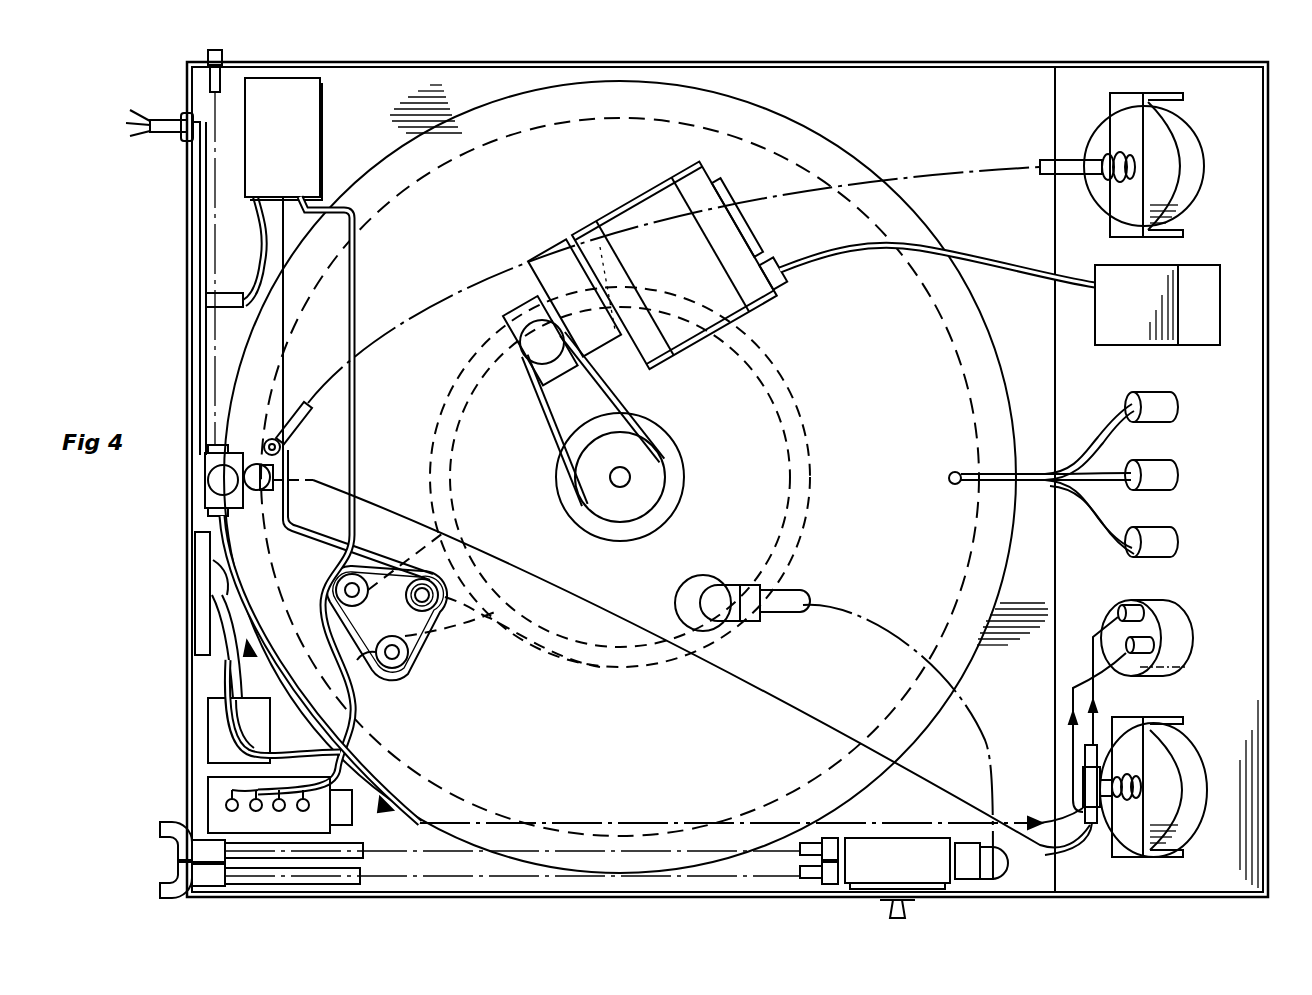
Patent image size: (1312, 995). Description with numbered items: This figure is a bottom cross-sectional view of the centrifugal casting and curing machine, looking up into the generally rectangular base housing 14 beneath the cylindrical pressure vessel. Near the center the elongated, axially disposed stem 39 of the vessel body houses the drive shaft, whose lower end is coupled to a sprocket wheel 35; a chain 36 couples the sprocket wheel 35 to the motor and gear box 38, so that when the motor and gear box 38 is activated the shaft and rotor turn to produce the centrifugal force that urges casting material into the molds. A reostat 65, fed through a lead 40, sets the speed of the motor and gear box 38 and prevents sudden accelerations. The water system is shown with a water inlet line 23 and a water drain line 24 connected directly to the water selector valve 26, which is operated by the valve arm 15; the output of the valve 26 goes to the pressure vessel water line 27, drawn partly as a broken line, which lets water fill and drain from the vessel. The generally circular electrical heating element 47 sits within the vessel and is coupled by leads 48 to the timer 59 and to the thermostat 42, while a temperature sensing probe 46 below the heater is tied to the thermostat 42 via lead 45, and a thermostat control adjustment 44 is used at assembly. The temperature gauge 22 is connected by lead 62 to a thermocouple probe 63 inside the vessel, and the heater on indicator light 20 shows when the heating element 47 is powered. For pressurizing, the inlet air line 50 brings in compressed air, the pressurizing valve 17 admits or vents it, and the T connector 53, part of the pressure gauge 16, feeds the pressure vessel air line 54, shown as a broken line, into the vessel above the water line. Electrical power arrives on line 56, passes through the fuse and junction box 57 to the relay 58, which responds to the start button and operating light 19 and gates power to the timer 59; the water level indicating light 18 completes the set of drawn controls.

The base housing 14 is at (1268, 225).
The valve arm 15 is at (210, 484).
The pressure gauge 16 is at (1200, 798).
The pressurizing valve 17 is at (1180, 648).
The water level indicating light 18 is at (1172, 537).
The start button and operating light 19 is at (1172, 473).
The heater on indicator light 20 is at (1172, 402).
The temperature gauge 22 is at (1190, 150).
The water inlet line 23 is at (160, 890).
The water drain line 24 is at (165, 838).
The water selector valve 26 is at (904, 863).
The pressure vessel water line 27 is at (788, 597).
The sprocket wheel 35 is at (662, 458).
The chain 36 is at (557, 430).
The motor and gear box 38 is at (740, 322).
The stem 39 is at (684, 493).
The lead 40 is at (828, 247).
The thermostat 42 is at (318, 137).
The thermostat control adjustment 44 is at (228, 295).
The lead 45 is at (285, 263).
The temperature sensing probe 46 is at (440, 598).
The electrical heating element 47 is at (582, 660).
The leads 48 is at (347, 713).
The inlet air line 50 is at (208, 57).
The T connector 53 is at (1083, 793).
The pressure vessel air line 54 is at (275, 472).
The power line 56 is at (160, 135).
The fuse and junction box 57 is at (195, 588).
The relay 58 is at (208, 720).
The timer 59 is at (223, 788).
The lead 62 is at (303, 408).
The thermocouple probe 63 is at (265, 441).
The reostat 65 is at (1148, 332).